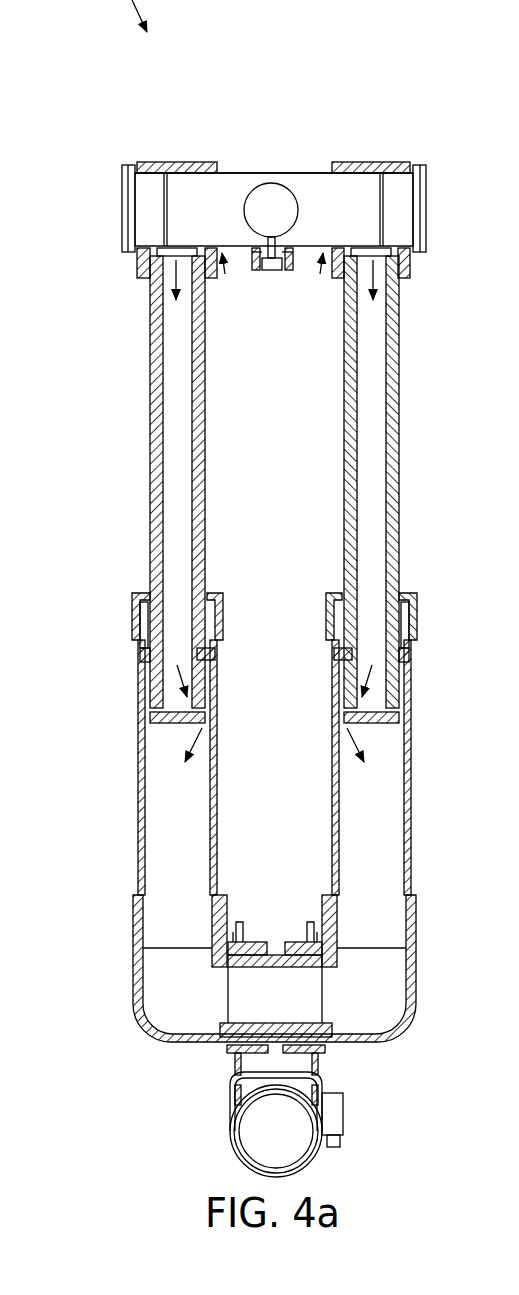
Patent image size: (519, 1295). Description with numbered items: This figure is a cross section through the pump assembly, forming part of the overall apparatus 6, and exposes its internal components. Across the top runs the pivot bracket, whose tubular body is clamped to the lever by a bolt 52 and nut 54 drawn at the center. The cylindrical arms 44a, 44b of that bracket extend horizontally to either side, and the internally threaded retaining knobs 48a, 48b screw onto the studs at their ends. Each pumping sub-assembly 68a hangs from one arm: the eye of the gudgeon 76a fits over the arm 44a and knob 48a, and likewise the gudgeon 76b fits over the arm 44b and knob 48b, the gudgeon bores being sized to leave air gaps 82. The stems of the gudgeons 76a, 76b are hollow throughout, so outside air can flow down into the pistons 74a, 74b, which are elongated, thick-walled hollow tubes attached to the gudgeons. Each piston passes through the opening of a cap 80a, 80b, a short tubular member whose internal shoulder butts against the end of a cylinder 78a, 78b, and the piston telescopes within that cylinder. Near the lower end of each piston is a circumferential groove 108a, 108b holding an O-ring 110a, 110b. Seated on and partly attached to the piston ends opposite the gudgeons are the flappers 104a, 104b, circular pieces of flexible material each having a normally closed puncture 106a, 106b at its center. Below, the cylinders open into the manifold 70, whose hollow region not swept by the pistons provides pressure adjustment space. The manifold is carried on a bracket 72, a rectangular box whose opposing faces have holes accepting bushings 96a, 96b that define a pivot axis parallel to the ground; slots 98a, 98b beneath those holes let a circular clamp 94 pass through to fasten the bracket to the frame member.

The dispensing apparatus 6 is at (443, 495).
The arm 44a is at (202, 197).
The arm 44b is at (348, 197).
The retaining knob 48a is at (150, 190).
The retaining knob 48b is at (400, 183).
The bolt 52 is at (295, 273).
The nut 54 is at (250, 270).
The sub-assembly 68a is at (127, 512).
The manifold 70 is at (420, 978).
The bracket 72 is at (312, 922).
The piston 74a is at (150, 445).
The piston 74b is at (398, 452).
The gudgeon 76a is at (183, 167).
The gudgeon 76b is at (378, 162).
The cylinder 78a is at (143, 830).
The cylinder 78b is at (410, 817).
The cap 80a is at (135, 597).
The cap 80b is at (412, 592).
The air gap 82 is at (133, 253).
The circular clamp 94 is at (330, 1108).
The bushing 96a is at (225, 1050).
The bushing 96b is at (327, 1048).
The slot 98a is at (233, 1077).
The slot 98b is at (323, 1077).
The flapper 104a is at (168, 722).
The flapper 104b is at (383, 713).
The puncture 106a is at (167, 728).
The puncture 106b is at (387, 727).
The circumferential groove 108a is at (138, 640).
The circumferential groove 108b is at (413, 638).
The O-ring 110a is at (148, 657).
The O-ring 110b is at (408, 650).